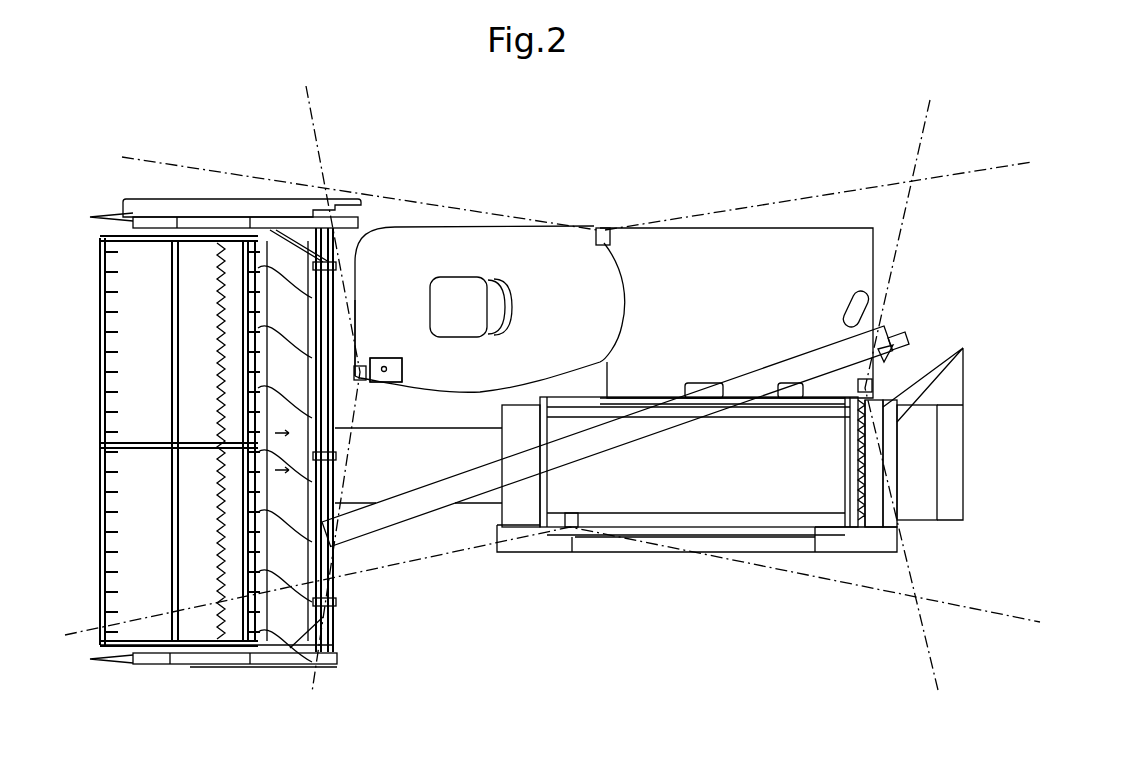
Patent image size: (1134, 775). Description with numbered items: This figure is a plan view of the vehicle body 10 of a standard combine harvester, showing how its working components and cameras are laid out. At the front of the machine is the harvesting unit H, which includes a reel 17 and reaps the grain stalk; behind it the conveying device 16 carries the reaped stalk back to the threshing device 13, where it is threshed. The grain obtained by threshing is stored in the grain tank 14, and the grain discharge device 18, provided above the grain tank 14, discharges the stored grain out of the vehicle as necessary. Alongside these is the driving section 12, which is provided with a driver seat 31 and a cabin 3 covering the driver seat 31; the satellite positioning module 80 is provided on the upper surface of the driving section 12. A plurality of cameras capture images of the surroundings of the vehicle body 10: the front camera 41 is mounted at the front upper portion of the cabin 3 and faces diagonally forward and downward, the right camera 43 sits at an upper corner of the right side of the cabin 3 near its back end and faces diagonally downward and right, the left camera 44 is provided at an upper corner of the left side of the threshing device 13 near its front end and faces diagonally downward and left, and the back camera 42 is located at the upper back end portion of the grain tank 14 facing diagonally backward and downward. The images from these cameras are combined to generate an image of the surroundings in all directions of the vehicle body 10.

The cabin 3 is at (622, 282).
The vehicle body 10 is at (581, 599).
The driving section 12 is at (460, 358).
The threshing device 13 is at (830, 500).
The grain tank 14 is at (828, 248).
The conveying device 16 is at (457, 445).
The reel 17 is at (96, 530).
The grain discharge device 18 is at (672, 415).
The driver seat 31 is at (507, 305).
The front camera 41 is at (362, 368).
The back camera 42 is at (867, 393).
The right camera 43 is at (597, 242).
The left camera 44 is at (598, 496).
The satellite positioning module 80 is at (382, 385).
The harvesting unit H is at (183, 678).